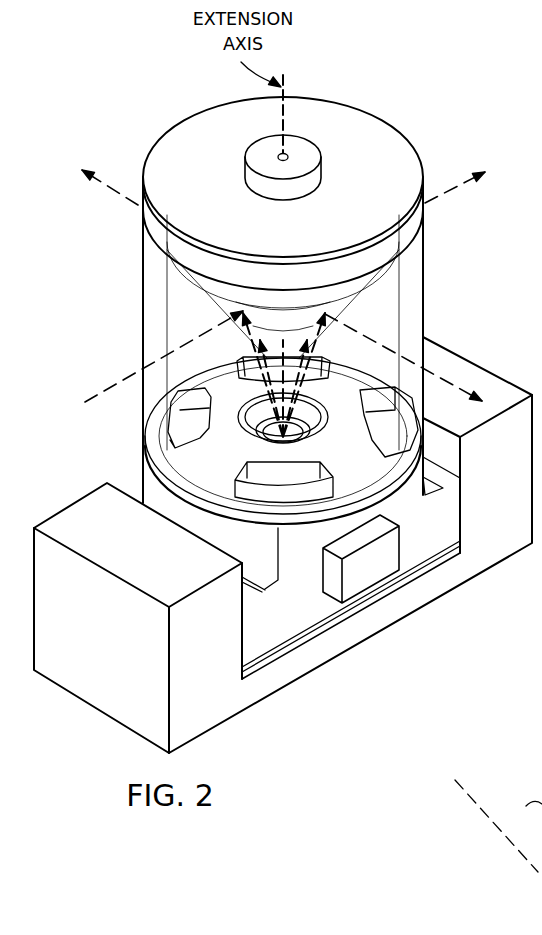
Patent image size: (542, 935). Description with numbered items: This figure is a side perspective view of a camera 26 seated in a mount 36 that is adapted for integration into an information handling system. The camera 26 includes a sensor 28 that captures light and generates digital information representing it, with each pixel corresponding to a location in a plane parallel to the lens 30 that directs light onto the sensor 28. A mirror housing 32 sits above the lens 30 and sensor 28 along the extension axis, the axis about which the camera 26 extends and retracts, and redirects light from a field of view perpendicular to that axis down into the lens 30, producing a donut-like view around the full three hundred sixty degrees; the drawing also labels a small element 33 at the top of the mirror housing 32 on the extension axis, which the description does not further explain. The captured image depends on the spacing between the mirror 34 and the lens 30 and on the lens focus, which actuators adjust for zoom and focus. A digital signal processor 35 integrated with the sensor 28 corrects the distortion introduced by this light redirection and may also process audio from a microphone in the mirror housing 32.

The camera 26 is at (452, 102).
The sensor 28 is at (304, 635).
The lens 30 is at (367, 373).
The mirror housing 32 is at (147, 153).
The spindle port 33 is at (304, 150).
The mirror 34 is at (222, 302).
The digital signal processor 35 is at (370, 573).
The mount 36 is at (80, 510).